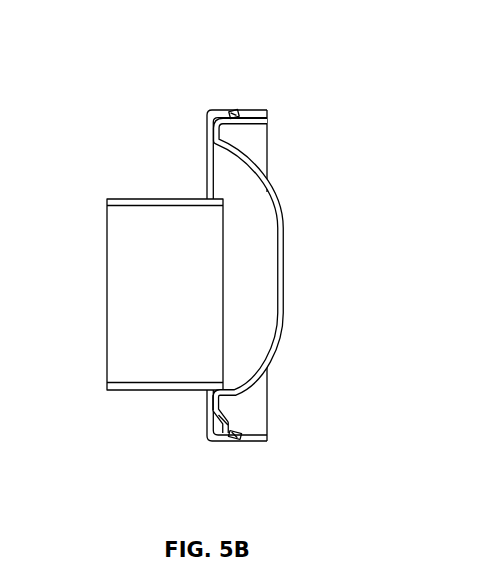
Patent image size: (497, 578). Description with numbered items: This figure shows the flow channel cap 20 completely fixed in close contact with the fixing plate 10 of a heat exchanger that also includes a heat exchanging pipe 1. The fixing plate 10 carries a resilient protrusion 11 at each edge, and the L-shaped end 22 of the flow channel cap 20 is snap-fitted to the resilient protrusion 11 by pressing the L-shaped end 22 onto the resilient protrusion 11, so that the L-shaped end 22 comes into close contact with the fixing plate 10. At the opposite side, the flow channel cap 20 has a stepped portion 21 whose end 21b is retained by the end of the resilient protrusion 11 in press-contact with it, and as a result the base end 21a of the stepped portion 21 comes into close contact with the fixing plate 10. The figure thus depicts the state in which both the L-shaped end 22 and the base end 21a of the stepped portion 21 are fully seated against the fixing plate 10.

The heat exchanging pipe 1 is at (117, 203).
The fixing plate 10 is at (207, 160).
The resilient protrusion 11 is at (243, 111).
The flow channel cap 20 is at (282, 217).
The stepped portion 21 is at (242, 403).
The base end 21a is at (218, 401).
The end 21b is at (220, 423).
The L-shaped end 22 is at (243, 132).